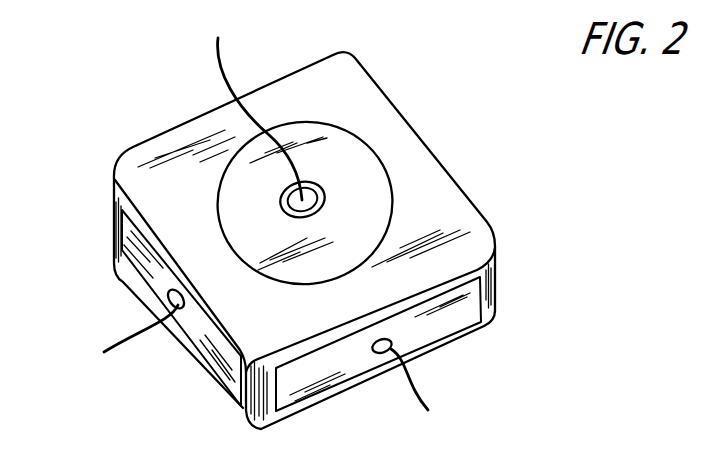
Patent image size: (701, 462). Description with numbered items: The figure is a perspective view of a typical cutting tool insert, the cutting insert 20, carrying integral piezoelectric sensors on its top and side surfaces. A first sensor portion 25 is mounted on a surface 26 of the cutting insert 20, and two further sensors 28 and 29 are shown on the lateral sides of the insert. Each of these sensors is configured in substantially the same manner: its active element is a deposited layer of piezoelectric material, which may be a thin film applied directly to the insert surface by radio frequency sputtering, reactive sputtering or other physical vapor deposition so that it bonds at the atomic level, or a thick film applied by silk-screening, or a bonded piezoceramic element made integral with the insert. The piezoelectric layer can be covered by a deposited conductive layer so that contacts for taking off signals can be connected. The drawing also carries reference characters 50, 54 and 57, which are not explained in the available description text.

The cutting insert 20 is at (137, 173).
The top cover 50 is at (377, 112).
The surface 26 is at (420, 152).
The first sensor portion 25 is at (377, 198).
The apertures 57 is at (313, 182).
The insertion direction 54 is at (185, 339).
The sensor 29 is at (212, 344).
The sensor 28 is at (327, 377).